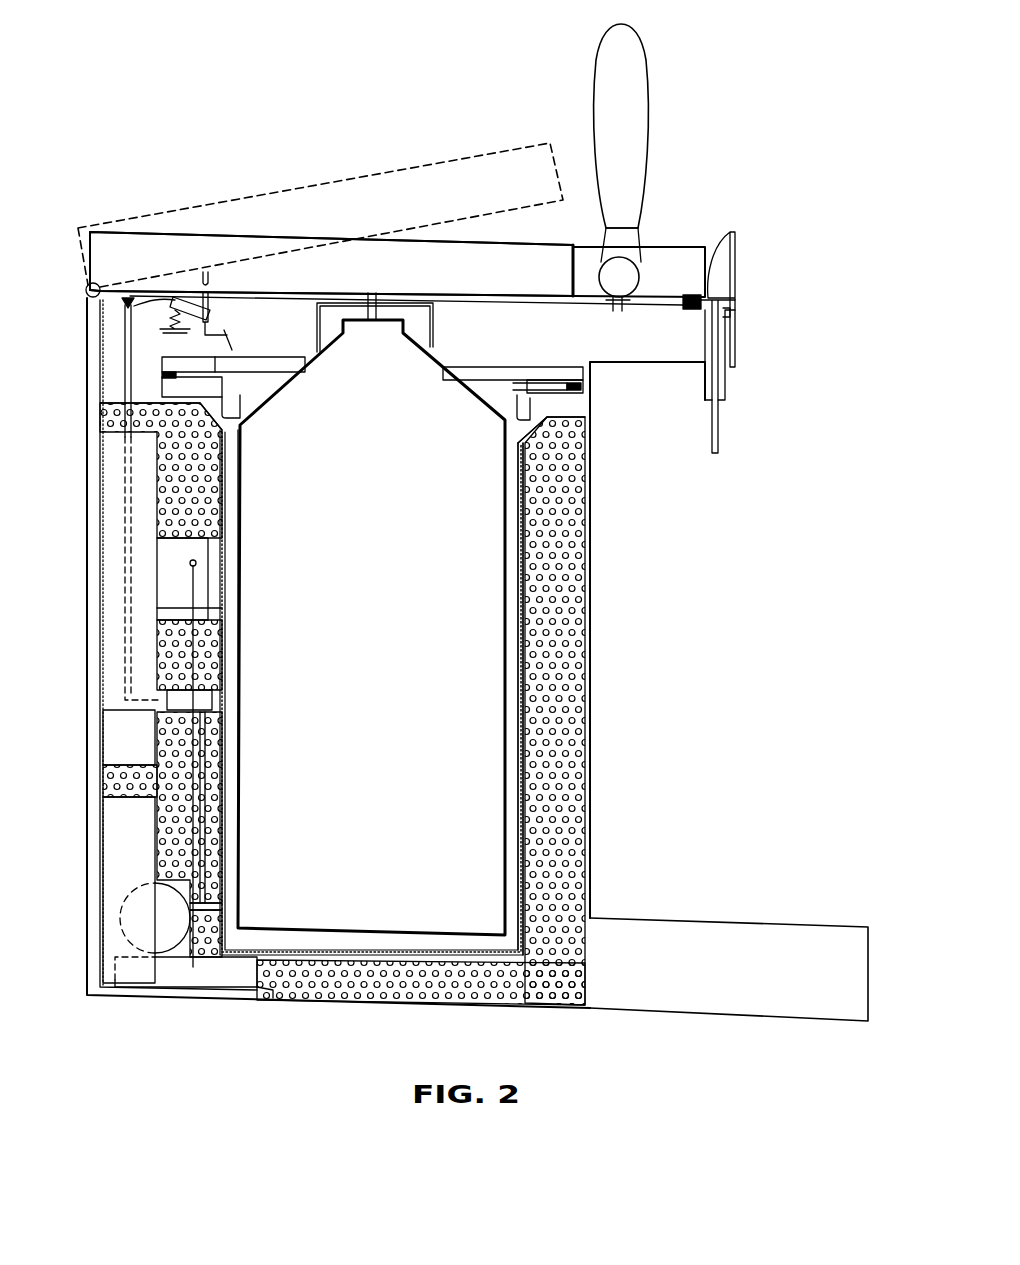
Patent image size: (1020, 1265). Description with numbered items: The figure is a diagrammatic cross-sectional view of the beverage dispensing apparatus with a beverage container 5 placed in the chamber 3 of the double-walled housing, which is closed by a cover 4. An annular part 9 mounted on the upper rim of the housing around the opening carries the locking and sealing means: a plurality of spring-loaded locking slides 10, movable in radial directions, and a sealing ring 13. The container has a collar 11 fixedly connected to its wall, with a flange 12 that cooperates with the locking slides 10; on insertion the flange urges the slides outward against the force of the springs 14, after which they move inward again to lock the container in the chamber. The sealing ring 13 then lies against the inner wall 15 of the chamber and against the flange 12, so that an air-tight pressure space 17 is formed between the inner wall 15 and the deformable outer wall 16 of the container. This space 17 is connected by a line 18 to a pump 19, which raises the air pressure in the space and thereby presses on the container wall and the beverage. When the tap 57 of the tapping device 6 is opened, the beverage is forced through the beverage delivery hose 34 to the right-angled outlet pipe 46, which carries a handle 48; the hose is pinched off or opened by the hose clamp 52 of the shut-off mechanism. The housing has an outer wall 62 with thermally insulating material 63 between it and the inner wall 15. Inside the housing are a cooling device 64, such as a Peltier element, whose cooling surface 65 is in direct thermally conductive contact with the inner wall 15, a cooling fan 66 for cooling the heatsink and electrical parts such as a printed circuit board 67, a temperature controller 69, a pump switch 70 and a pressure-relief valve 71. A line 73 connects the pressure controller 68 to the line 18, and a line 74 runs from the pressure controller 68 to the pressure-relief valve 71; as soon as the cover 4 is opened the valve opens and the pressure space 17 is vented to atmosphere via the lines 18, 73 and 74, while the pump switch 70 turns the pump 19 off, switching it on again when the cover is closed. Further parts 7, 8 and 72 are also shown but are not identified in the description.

The chamber 3 is at (523, 517).
The cover 4 is at (122, 252).
The beverage container 5 is at (430, 581).
The tapping device 6 is at (665, 222).
The lid plate 7 is at (511, 300).
The steam outlet stem 8 is at (345, 338).
The annular part 9 is at (558, 365).
The locking slides 10 is at (180, 374).
The collar 11 is at (319, 352).
The flange 12 is at (243, 408).
The sealing ring 13 is at (224, 430).
The springs 14 is at (570, 386).
The inner wall 15 is at (228, 650).
The outer wall of the container 16 is at (240, 508).
The air-tight space 17 is at (513, 738).
The line 18 is at (215, 908).
The pump 19 is at (165, 918).
The beverage delivery hose 34 is at (331, 264).
The outlet pipe 46 is at (720, 448).
The handle 48 is at (737, 270).
The hose clamp 52 is at (627, 306).
The tap 57 is at (647, 48).
The outer wall 62 is at (592, 665).
The thermally insulating material 63 is at (548, 805).
The cooling device 64 is at (170, 580).
The cooling surface 65 is at (180, 608).
The cooling fan 66 is at (125, 830).
The printed circuit board 67 is at (175, 967).
The pressure controller 68 is at (180, 703).
The temperature controller 69 is at (190, 563).
The pump switch 70 is at (127, 306).
The pressure-relief valve 71 is at (133, 299).
The foundation 72 is at (777, 918).
The line 73 is at (205, 807).
The line 74 is at (125, 486).